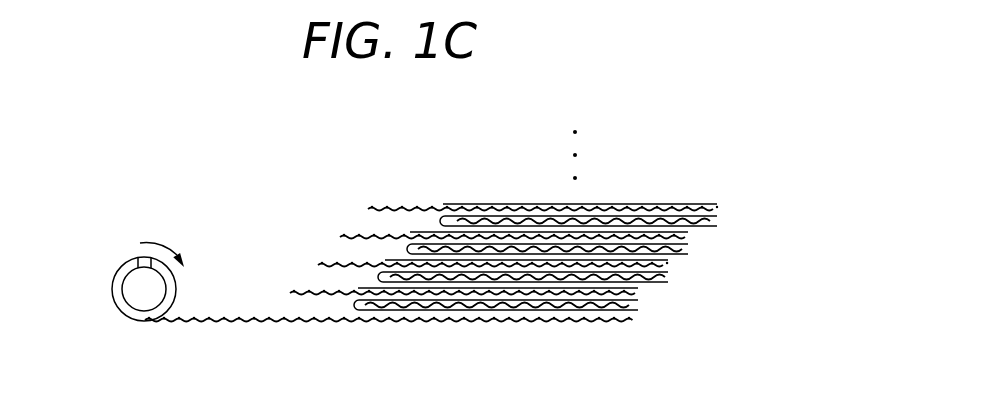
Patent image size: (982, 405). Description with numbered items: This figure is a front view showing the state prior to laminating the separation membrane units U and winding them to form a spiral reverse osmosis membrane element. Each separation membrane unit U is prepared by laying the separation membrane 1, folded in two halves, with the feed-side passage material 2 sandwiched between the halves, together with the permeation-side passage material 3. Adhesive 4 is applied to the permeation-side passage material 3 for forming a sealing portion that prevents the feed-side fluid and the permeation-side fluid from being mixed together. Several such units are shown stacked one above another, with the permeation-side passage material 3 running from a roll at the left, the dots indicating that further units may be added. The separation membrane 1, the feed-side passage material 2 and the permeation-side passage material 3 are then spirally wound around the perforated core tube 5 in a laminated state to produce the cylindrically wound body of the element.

The separation membrane 1 is at (443, 313).
The feed-side passage material 2 is at (638, 303).
The permeation-side passage material 3 is at (290, 293).
The adhesive 4 is at (680, 203).
The perforated core tube 5 is at (116, 310).
The separation membrane unit U is at (559, 203).